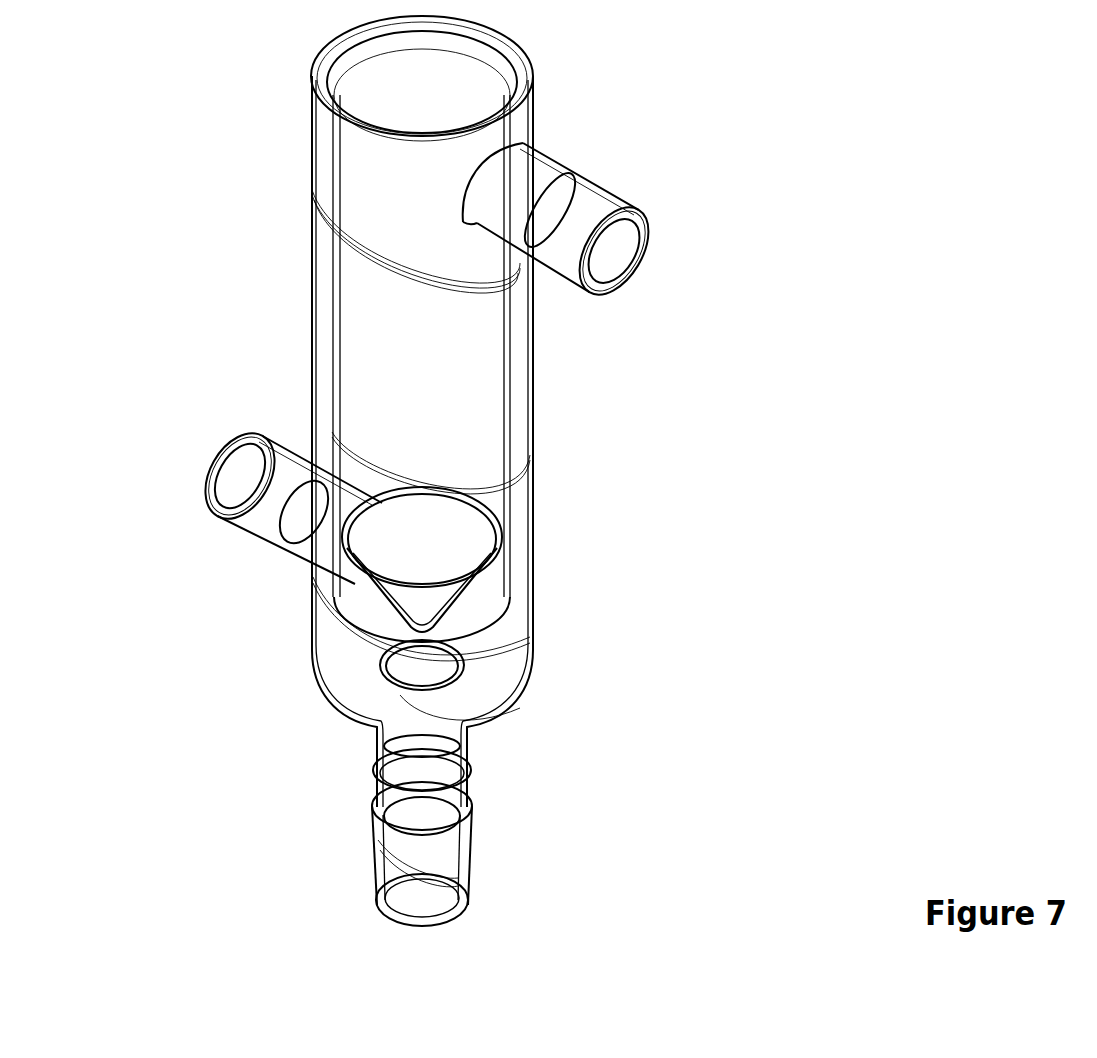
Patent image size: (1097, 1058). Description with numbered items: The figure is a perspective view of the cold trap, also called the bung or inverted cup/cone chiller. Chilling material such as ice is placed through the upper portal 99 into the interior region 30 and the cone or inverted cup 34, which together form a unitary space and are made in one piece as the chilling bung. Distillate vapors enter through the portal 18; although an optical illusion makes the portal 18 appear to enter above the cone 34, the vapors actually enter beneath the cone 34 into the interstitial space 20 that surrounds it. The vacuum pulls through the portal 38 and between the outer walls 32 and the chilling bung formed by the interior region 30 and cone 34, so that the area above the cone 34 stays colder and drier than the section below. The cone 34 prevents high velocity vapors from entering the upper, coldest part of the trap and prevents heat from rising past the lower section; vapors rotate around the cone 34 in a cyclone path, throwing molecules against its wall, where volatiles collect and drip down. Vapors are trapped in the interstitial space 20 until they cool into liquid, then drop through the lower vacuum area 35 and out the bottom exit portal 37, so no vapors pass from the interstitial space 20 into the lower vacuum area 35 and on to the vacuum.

The upper portal 99 is at (368, 85).
The outer walls 32 is at (313, 217).
The interior region 30 is at (367, 305).
The portal 38 is at (585, 212).
The portal 18 is at (225, 462).
The cone or inverted cup 34 is at (483, 553).
The interstitial space 20 is at (473, 615).
The lower vacuum area 35 is at (475, 698).
The bottom exit portal 37 is at (458, 843).